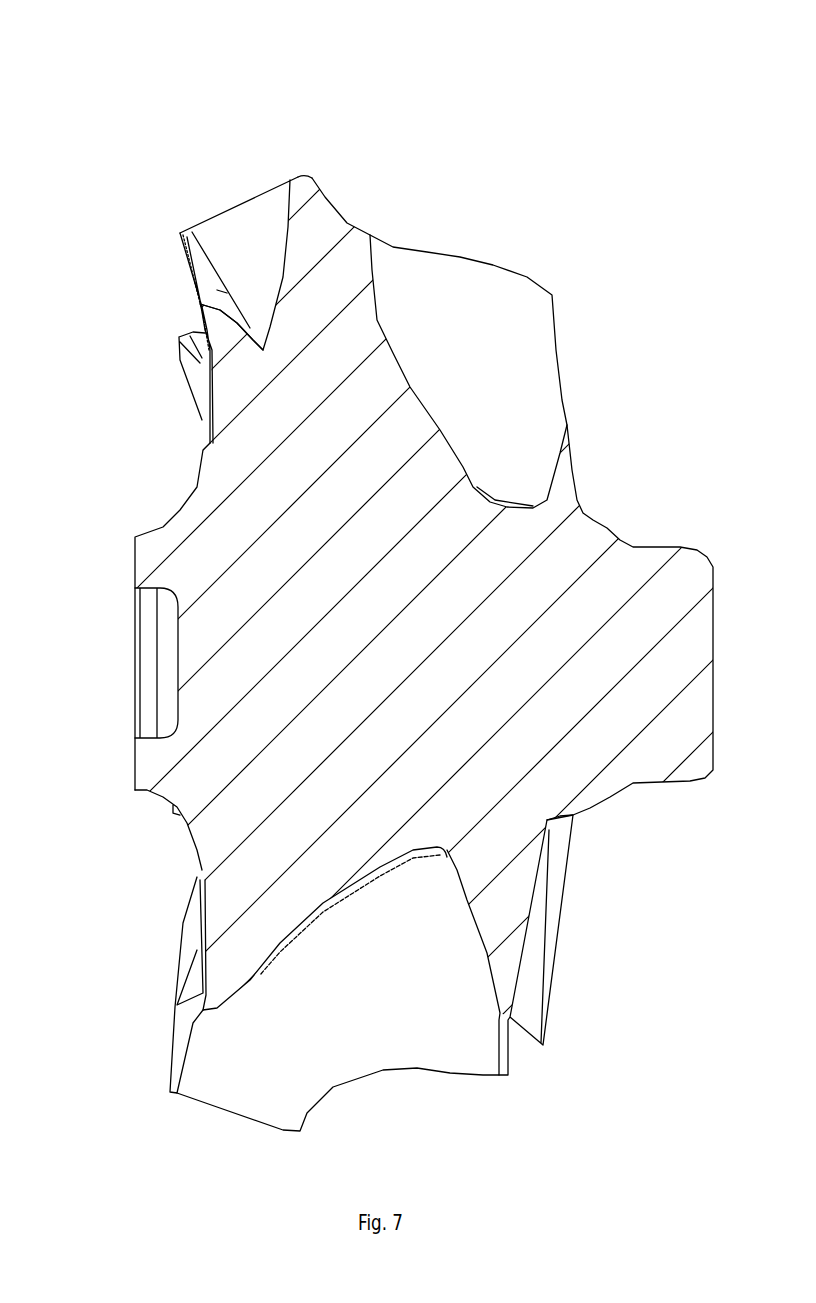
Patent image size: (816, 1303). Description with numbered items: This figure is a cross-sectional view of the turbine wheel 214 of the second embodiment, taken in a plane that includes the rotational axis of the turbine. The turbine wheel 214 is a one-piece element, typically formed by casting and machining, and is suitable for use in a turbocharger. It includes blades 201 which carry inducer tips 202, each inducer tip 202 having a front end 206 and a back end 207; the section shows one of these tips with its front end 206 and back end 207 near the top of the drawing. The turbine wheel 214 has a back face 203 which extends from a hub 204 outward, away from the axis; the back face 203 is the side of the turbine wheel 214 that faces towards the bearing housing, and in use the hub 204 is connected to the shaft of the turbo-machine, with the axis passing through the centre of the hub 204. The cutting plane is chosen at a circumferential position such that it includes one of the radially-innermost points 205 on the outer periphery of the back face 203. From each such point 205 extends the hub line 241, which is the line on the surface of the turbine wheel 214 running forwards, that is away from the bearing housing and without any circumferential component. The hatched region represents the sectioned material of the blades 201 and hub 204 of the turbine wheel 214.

The blades 201 is at (317, 232).
The inducer tips 202 is at (257, 195).
The back face 203 is at (185, 498).
The hub 204 is at (132, 719).
The radially-innermost point 205 is at (198, 305).
The front end 206 is at (308, 167).
The back end 207 is at (180, 232).
The turbine wheel 214 is at (608, 197).
The hub line 241 is at (240, 340).